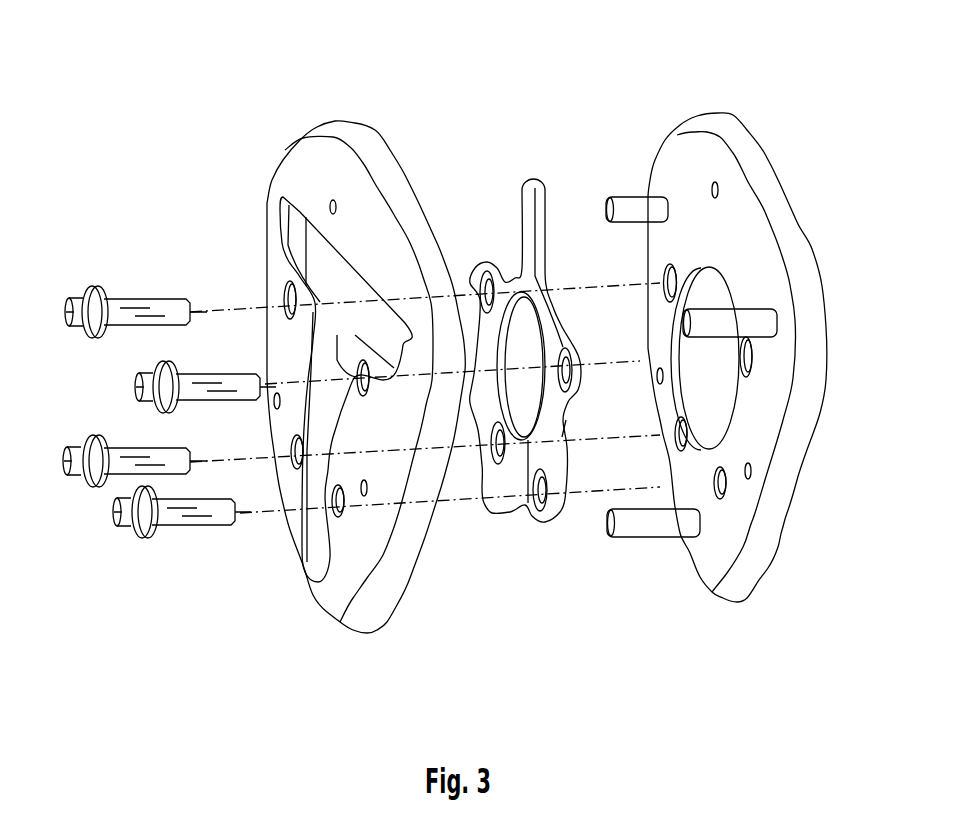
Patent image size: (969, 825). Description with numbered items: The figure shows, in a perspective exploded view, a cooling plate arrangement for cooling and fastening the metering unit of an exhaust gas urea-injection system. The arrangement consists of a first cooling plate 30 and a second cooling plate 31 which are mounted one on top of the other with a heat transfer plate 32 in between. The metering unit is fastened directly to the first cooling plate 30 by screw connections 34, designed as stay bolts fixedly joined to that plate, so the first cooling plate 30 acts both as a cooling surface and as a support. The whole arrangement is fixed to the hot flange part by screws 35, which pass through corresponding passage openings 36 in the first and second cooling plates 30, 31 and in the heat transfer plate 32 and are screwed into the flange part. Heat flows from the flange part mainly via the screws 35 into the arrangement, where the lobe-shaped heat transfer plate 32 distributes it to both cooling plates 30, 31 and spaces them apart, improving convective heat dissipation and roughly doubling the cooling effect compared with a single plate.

The first cooling plate 30 is at (722, 102).
The second cooling plate 31 is at (356, 112).
The heat transfer plate 32 is at (538, 165).
The screw connections 34 is at (606, 197).
The screws 35 is at (77, 330).
The passage openings 36 is at (283, 305).